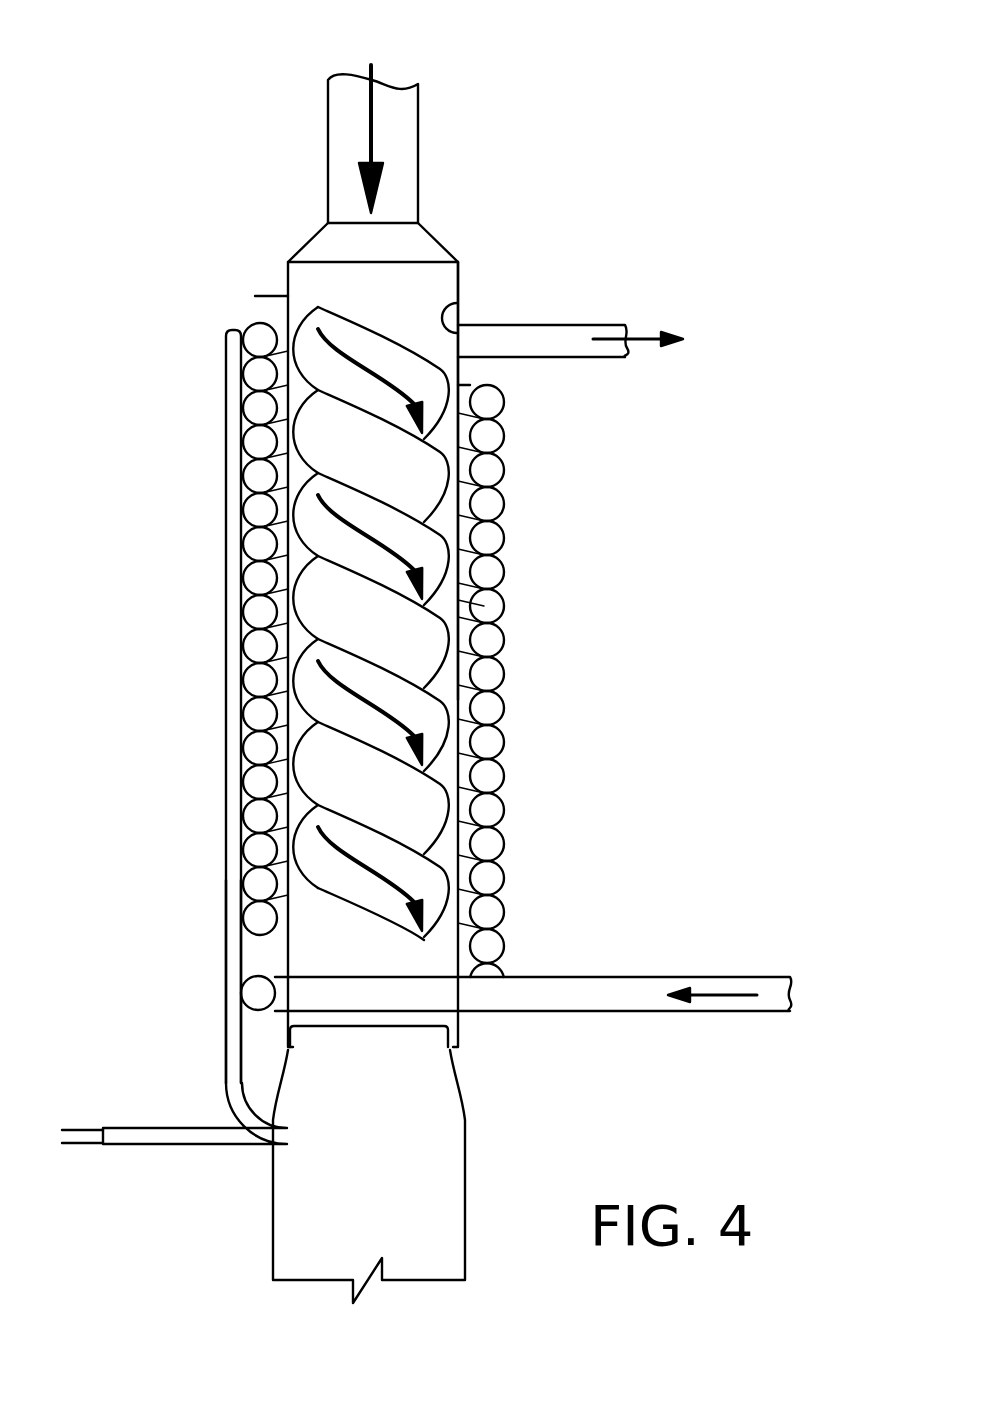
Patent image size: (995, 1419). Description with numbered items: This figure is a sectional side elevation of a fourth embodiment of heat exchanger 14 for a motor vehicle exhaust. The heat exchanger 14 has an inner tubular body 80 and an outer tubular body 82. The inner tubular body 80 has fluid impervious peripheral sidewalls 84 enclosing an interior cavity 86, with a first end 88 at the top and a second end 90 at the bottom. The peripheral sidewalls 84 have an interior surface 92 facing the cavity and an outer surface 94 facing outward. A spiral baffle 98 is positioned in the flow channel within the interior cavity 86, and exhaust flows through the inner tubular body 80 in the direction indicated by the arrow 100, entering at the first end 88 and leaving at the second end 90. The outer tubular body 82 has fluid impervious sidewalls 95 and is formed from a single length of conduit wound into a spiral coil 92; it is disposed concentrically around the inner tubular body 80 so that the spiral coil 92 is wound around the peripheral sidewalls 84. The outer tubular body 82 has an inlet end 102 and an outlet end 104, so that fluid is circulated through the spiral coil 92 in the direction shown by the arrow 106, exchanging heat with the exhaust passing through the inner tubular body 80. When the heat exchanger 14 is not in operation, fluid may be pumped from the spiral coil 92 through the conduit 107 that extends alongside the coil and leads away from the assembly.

The heat exchanger 14 is at (228, 185).
The inner tubular body 80 is at (440, 162).
The outer tubular body 82 is at (520, 458).
The peripheral sidewalls 84 is at (260, 295).
The interior cavity 86 is at (401, 316).
The first end 88 is at (263, 265).
The second end 90 is at (503, 1052).
The spiral coil 92 is at (457, 300).
The outer surface 94 is at (472, 268).
The sidewalls 95 is at (503, 607).
The spiral baffle 98 is at (347, 582).
The arrow 100 is at (368, 130).
The inlet end 102 is at (622, 987).
The outlet end 104 is at (555, 325).
The arrow 106 is at (637, 337).
The conduit 107 is at (232, 888).